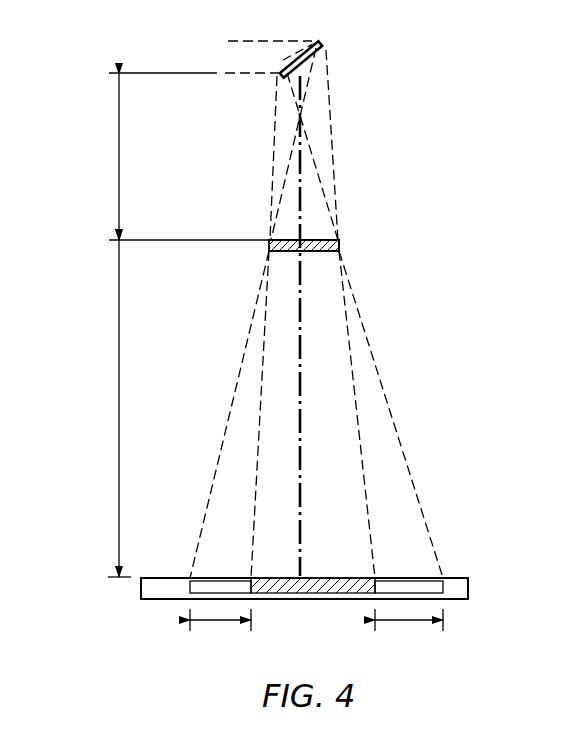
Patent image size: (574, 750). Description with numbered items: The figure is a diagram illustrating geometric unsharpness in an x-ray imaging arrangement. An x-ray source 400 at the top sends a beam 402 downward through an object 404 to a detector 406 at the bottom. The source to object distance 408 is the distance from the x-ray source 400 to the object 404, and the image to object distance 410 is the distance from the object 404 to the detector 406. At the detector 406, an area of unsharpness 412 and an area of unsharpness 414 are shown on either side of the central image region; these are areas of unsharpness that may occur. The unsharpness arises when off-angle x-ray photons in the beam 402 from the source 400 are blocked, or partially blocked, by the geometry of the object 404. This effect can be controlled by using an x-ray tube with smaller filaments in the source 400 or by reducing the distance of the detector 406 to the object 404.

The x-ray source 400 is at (320, 56).
The beam 402 is at (400, 444).
The object 404 is at (320, 253).
The detector 406 is at (328, 577).
The source to object distance 408 is at (119, 157).
The image to object distance 410 is at (119, 410).
The area of unsharpness 412 is at (216, 620).
The area of unsharpness 414 is at (410, 620).